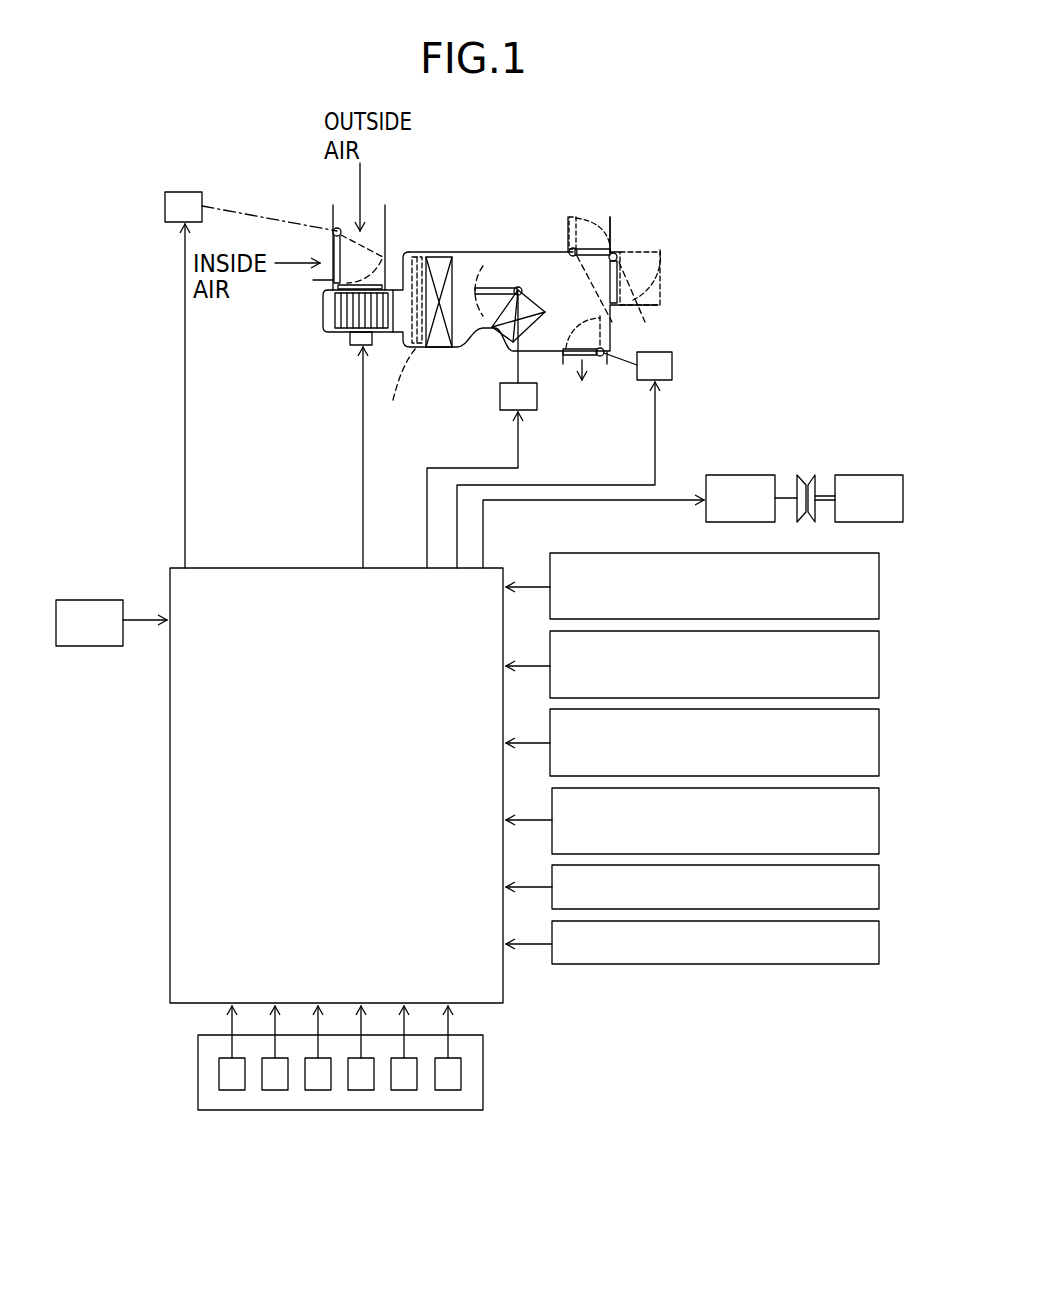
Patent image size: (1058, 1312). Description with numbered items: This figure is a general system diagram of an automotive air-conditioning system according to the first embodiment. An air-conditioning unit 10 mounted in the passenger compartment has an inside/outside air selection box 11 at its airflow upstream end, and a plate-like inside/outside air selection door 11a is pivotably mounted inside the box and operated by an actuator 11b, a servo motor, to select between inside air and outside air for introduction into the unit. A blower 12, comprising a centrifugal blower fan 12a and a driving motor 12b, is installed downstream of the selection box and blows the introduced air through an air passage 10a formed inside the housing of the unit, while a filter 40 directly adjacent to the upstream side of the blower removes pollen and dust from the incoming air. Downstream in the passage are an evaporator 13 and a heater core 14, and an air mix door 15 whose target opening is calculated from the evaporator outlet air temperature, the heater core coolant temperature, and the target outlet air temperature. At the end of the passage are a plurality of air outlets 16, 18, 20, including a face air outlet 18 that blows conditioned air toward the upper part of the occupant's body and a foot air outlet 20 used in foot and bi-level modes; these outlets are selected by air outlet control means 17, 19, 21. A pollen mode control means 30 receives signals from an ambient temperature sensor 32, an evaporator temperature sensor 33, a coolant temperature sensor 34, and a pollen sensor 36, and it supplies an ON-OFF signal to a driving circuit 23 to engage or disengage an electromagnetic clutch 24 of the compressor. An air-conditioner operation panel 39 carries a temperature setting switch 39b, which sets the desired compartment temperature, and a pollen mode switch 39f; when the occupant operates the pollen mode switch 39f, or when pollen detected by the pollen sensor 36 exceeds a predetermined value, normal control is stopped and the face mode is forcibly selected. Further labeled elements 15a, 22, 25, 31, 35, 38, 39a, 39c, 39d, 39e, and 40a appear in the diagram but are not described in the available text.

The air-conditioning unit 10 is at (457, 250).
The air passage 10a is at (487, 250).
The inside/outside air selection box 11 is at (383, 240).
The inside/outside air selection door 11a is at (327, 250).
The actuator 11b is at (185, 192).
The blower 12 is at (318, 338).
The centrifugal blower fan 12a is at (346, 310).
The driving motor 12b is at (360, 347).
The evaporator 13 is at (442, 340).
The heater core 14 is at (506, 342).
The air mix door 15 is at (493, 288).
The servomotor for air mix door 15a is at (499, 410).
The air outlet 16 is at (583, 237).
The air outlet control means 17 is at (603, 247).
The face air outlet 18 is at (630, 257).
The air outlet control means 19 is at (627, 287).
The foot air outlet 20 is at (575, 362).
The air outlet control means 21 is at (568, 346).
The servomotor for mode doors 22 is at (635, 378).
The driving circuit 23 is at (737, 475).
The electromagnetic clutch 24 is at (800, 475).
The engine 25 is at (863, 475).
The pollen mode control means 30 is at (170, 752).
The passenger compartment temperature sensor 31 is at (880, 576).
The ambient temperature sensor 32 is at (880, 654).
The evaporator temperature sensor 33 is at (880, 730).
The coolant temperature sensor 34 is at (880, 818).
The solar radiation sensor 35 is at (880, 886).
The pollen sensor 36 is at (880, 940).
The ignition switch 38 is at (108, 600).
The air-conditioner operation panel 39 is at (198, 1072).
The operation switch 39a is at (230, 1090).
The temperature setting switch 39b is at (275, 1090).
The operation switch 39c is at (318, 1090).
The operation switch 39d is at (361, 1090).
The operation switch 39e is at (404, 1090).
The pollen mode switch 39f is at (448, 1090).
The filter 40 is at (385, 277).
The evaporator surface 40a is at (398, 387).